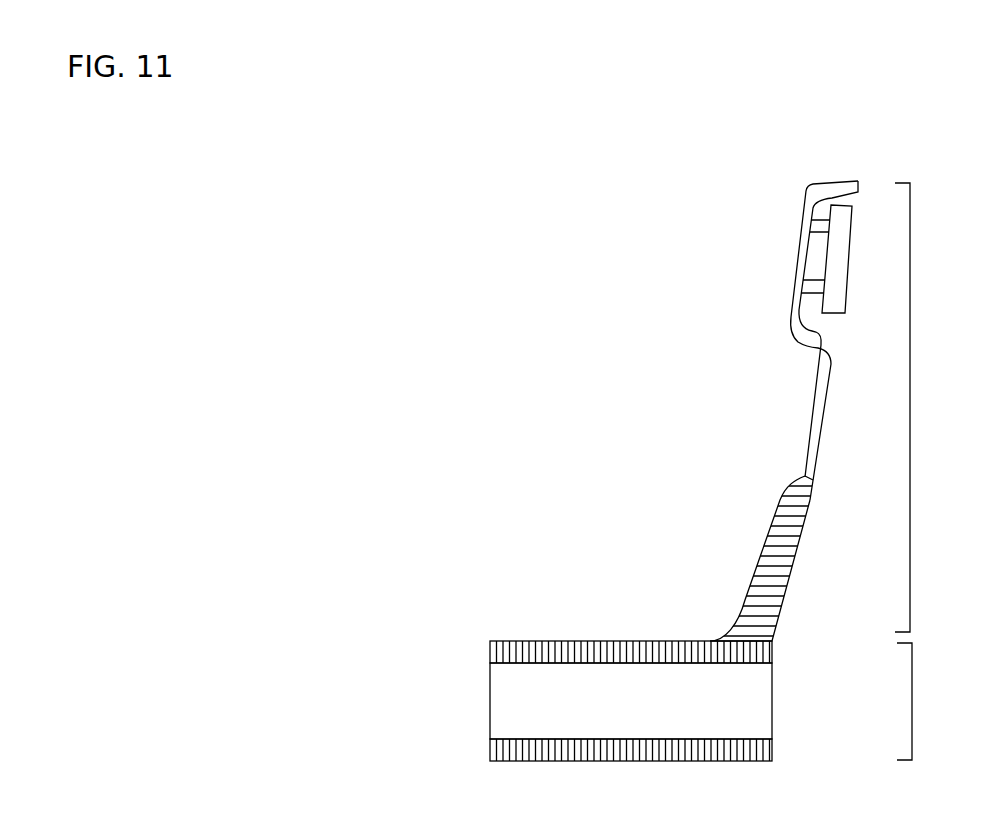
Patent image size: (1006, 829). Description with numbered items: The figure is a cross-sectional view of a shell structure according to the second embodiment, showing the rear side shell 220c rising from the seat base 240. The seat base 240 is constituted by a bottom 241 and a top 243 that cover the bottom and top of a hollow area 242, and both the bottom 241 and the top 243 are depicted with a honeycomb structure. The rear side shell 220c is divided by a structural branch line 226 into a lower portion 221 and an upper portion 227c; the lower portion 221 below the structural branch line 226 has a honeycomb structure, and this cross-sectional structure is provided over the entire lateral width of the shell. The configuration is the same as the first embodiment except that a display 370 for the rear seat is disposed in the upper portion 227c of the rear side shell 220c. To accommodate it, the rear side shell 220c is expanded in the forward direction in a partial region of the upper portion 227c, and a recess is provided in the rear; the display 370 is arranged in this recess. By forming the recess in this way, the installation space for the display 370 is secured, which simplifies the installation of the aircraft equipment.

The rear side shell 220c is at (910, 407).
The lower portion 221 is at (780, 550).
The structural branch line 226 is at (803, 476).
The upper portion 227c is at (797, 278).
The display 370 is at (835, 223).
The seat base 240 is at (912, 702).
The bottom 241 is at (505, 750).
The hollow area 242 is at (510, 705).
The top 243 is at (503, 657).